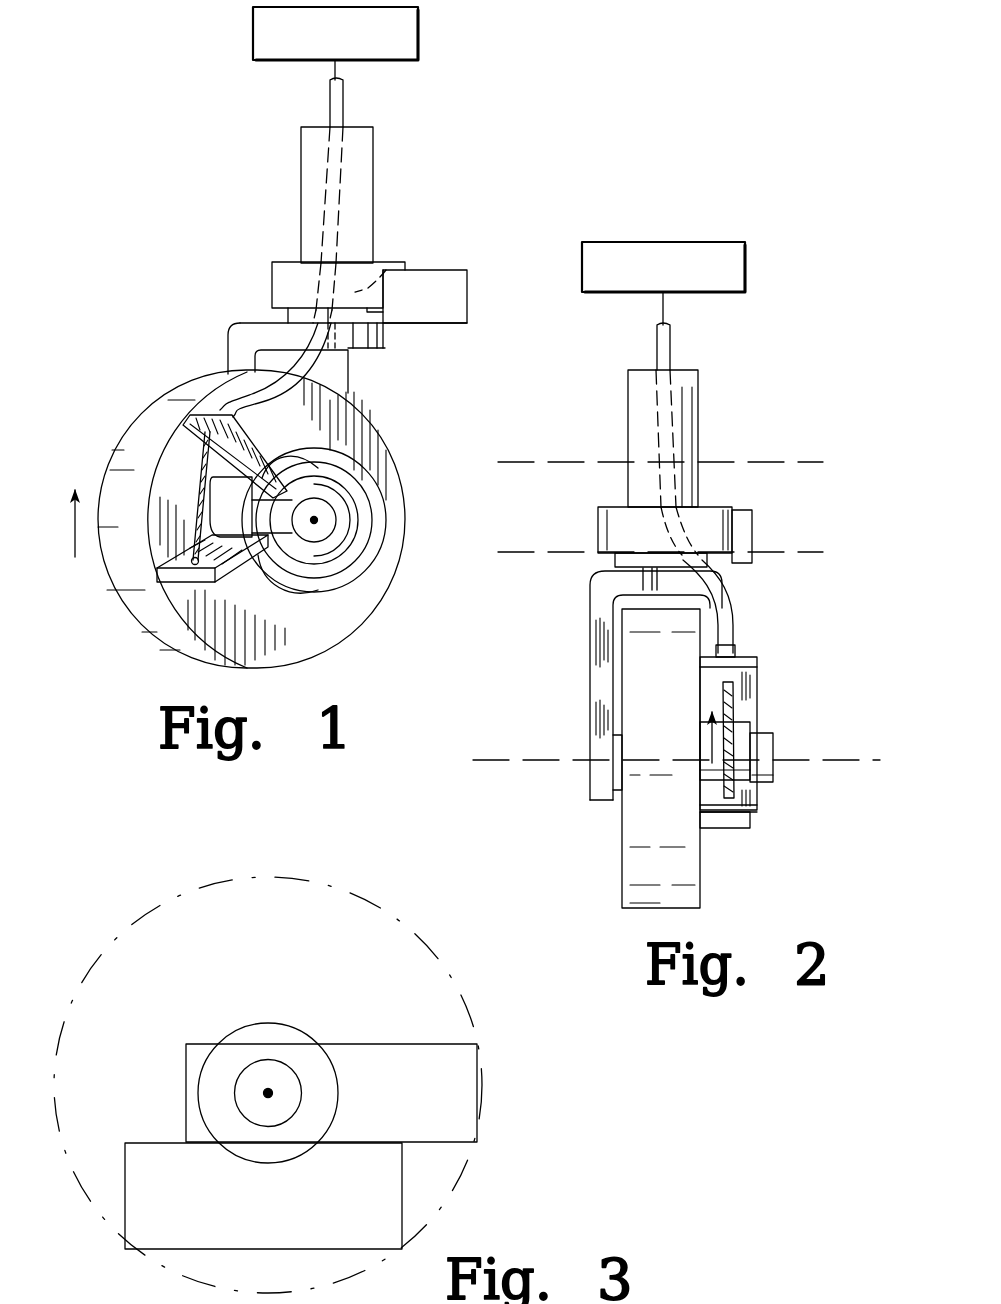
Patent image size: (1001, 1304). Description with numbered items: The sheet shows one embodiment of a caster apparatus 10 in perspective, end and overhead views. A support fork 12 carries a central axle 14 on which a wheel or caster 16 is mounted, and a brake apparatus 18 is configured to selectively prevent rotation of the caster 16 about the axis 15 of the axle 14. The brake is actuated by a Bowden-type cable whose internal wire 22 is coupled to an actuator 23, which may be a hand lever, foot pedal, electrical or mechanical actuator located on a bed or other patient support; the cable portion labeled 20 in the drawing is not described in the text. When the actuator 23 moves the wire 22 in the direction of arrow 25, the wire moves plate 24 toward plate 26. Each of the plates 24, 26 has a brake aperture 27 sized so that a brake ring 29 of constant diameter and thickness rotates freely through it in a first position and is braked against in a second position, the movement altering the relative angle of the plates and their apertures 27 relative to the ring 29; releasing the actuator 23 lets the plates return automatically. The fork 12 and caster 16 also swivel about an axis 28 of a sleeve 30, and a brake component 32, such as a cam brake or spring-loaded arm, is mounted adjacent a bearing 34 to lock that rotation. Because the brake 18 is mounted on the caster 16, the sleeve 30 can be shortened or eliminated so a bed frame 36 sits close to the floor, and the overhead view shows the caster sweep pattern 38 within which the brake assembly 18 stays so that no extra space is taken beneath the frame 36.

In FIG. 1, the caster apparatus 10 is at (144, 284).
In FIG. 2, the caster apparatus 10 is at (818, 634).
In FIG. 1, the support fork 12 is at (350, 374).
In FIG. 2, the support fork 12 is at (590, 672).
In FIG. 2, the central axle 14 is at (618, 778).
In FIG. 2, the axis 15 is at (512, 758).
In FIG. 1, the wheel or caster 16 is at (343, 631).
In FIG. 2, the wheel or caster 16 is at (694, 872).
In FIG. 3, the wheel or caster 16 is at (386, 1052).
In FIG. 1, the brake apparatus 18 is at (363, 560).
In FIG. 2, the brake apparatus 18 is at (772, 721).
In FIG. 3, the brake apparatus 18 is at (255, 1220).
In FIG. 1, the cable 20 is at (327, 101).
In FIG. 2, the cable 20 is at (655, 345).
In FIG. 1, the internal wire 22 is at (198, 490).
In FIG. 2, the internal wire 22 is at (735, 720).
In FIG. 1, the actuator 23 is at (422, 32).
In FIG. 2, the actuator 23 is at (748, 272).
In FIG. 1, the plate 24 is at (185, 562).
In FIG. 2, the plate 24 is at (758, 812).
In FIG. 1, the arrow 25 is at (75, 522).
In FIG. 2, the arrow 25 is at (711, 742).
In FIG. 1, the plate 26 is at (248, 428).
In FIG. 2, the plate 26 is at (748, 657).
In FIG. 1, the brake aperture 27 is at (303, 480).
In FIG. 1, the axis 28 is at (375, 275).
In FIG. 2, the axis 28 is at (661, 560).
In FIG. 3, the axis 28 is at (271, 1088).
In FIG. 1, the brake ring 29 is at (348, 482).
In FIG. 1, the sleeve 30 is at (376, 148).
In FIG. 2, the sleeve 30 is at (700, 395).
In FIG. 3, the sleeve 30 is at (290, 1095).
In FIG. 1, the brake component 32 is at (461, 273).
In FIG. 2, the brake component 32 is at (750, 524).
In FIG. 1, the bearing 34 is at (282, 262).
In FIG. 2, the bearing 34 is at (597, 527).
In FIG. 3, the bearing 34 is at (270, 1023).
In FIG. 2, the bed frame 36 is at (777, 480).
In FIG. 3, the caster sweep pattern 38 is at (133, 927).